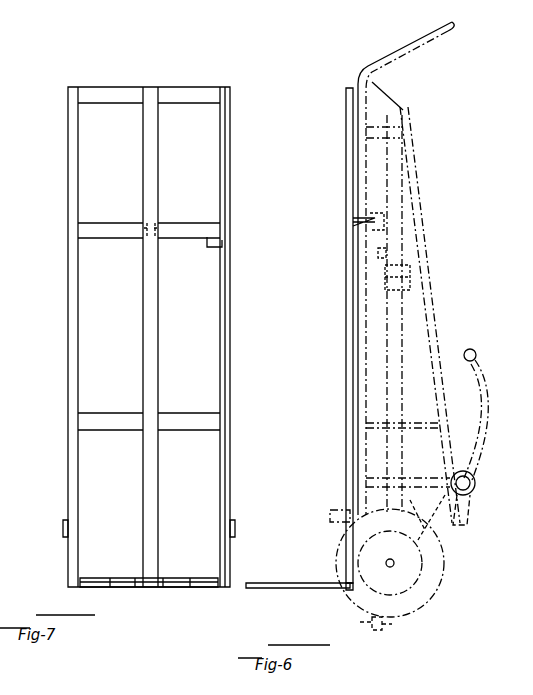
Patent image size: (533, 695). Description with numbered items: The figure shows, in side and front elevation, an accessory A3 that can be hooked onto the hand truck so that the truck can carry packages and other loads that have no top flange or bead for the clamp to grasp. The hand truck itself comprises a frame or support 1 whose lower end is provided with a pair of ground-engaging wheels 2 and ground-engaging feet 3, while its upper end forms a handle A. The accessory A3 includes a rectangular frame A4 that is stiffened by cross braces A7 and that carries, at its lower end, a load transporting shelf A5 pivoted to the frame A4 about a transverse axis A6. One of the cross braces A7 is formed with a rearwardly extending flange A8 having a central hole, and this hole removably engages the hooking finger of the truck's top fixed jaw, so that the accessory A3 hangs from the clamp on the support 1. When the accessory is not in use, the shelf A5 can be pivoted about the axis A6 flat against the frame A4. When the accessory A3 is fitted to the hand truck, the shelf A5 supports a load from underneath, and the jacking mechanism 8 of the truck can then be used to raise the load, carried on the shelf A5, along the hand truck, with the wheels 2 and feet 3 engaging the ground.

In FIG. 6, the handle A is at (440, 38).
In FIG. 6, the frame or support 1 is at (432, 298).
In FIG. 6, the ground-engaging wheels 2 is at (446, 578).
In FIG. 6, the ground-engaging feet 3 is at (424, 495).
In FIG. 7, the jacking mechanism 8 is at (122, 190).
In FIG. 7, the accessory A3 is at (60, 334).
In FIG. 6, the accessory A3 is at (344, 312).
In FIG. 7, the rectangular frame A4 is at (68, 412).
In FIG. 7, the load transporting shelf A5 is at (182, 588).
In FIG. 6, the load transporting shelf A5 is at (283, 585).
In FIG. 6, the transverse axis A6 is at (346, 590).
In FIG. 7, the cross braces A7 is at (222, 244).
In FIG. 7, the rearwardly extending flange A8 is at (160, 223).